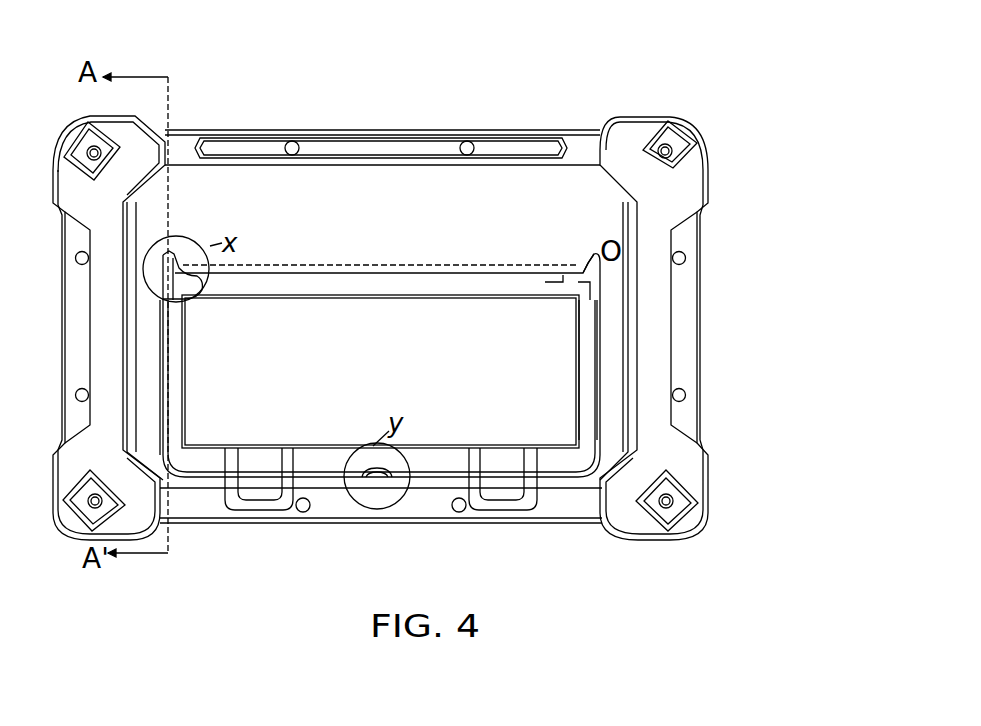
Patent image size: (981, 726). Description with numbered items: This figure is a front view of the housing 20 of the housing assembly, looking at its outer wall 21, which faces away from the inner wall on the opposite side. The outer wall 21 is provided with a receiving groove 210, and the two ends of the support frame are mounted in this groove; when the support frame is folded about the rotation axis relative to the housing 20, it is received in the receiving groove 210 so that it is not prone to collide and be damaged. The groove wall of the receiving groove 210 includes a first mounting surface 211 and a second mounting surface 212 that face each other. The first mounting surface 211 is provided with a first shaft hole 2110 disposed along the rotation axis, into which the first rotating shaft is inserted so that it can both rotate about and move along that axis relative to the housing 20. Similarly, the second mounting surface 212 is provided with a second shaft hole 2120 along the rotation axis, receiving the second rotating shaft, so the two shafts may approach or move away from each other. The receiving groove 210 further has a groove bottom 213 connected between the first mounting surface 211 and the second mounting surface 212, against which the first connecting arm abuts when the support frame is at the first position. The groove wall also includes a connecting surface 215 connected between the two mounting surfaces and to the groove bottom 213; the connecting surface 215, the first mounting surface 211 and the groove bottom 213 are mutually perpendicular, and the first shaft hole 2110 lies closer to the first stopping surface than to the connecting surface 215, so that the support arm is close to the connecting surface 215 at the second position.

The housing 20 is at (657, 63).
The outer wall 21 is at (612, 213).
The receiving groove 210 is at (592, 330).
The first mounting surface 211 is at (168, 367).
The second mounting surface 212 is at (582, 368).
The groove bottom 213 is at (592, 403).
The connecting surface 215 is at (326, 470).
The first shaft hole 2110 is at (171, 255).
The second shaft hole 2120 is at (593, 257).